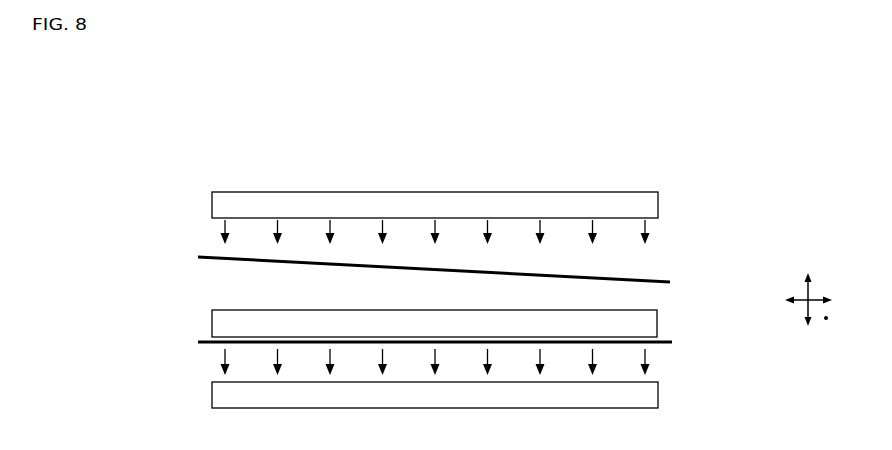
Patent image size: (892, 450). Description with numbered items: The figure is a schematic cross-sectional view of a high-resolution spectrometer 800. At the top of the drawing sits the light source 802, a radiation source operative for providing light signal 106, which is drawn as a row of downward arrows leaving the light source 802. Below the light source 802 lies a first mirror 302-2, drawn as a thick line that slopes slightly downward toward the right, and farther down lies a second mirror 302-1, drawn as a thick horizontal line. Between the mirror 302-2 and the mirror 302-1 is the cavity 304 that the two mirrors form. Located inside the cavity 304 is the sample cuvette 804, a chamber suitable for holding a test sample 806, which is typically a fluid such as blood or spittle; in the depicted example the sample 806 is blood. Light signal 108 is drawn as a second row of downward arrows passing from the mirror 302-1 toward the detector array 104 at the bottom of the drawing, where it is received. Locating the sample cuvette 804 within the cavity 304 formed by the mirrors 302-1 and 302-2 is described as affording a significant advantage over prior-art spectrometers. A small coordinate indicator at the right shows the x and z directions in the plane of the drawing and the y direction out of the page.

The spectrometer 800 is at (100, 149).
The light source 802 is at (497, 215).
The light signal 106 is at (670, 232).
The mirror 302-2 is at (198, 259).
The cavity 304 is at (350, 300).
The sample cuvette 804 is at (657, 322).
The sample 806 is at (478, 333).
The mirror 302-1 is at (198, 341).
The light signal 108 is at (670, 362).
The detector array 104 is at (505, 405).